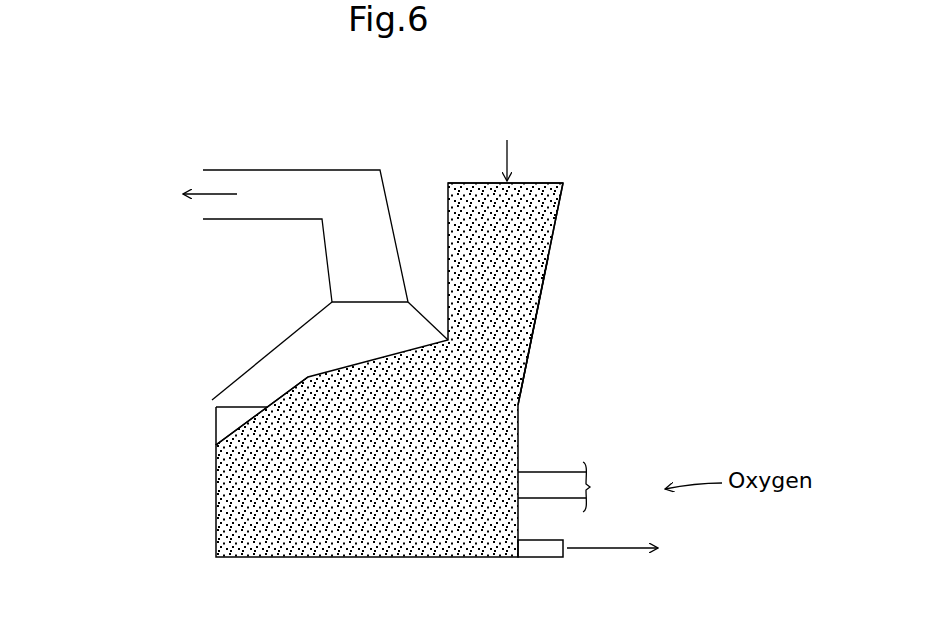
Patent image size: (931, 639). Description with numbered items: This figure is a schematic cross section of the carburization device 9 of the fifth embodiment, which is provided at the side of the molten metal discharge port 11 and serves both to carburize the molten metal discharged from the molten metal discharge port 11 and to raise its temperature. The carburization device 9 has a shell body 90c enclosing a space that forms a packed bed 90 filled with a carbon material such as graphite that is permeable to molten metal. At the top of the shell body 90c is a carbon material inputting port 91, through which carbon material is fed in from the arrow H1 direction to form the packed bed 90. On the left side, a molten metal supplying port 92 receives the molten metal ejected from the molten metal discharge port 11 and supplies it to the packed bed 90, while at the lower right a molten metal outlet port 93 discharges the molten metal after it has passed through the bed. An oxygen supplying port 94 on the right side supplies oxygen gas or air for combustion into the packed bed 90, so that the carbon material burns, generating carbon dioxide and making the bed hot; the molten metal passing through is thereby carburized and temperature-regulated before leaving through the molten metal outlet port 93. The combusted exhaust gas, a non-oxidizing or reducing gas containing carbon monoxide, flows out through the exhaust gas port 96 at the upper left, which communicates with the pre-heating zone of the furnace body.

The carburization device 9 is at (233, 356).
The molten metal discharge port 11 is at (185, 423).
The packed bed 90 is at (445, 442).
The shell body 90c is at (553, 230).
The carbon material inputting port 91 is at (530, 293).
The molten metal supplying port 92 is at (230, 437).
The molten metal outlet port 93 is at (555, 553).
The oxygen supplying port 94 is at (575, 483).
The exhaust gas port 96 is at (294, 185).
The arrow H1 direction H1 is at (510, 155).